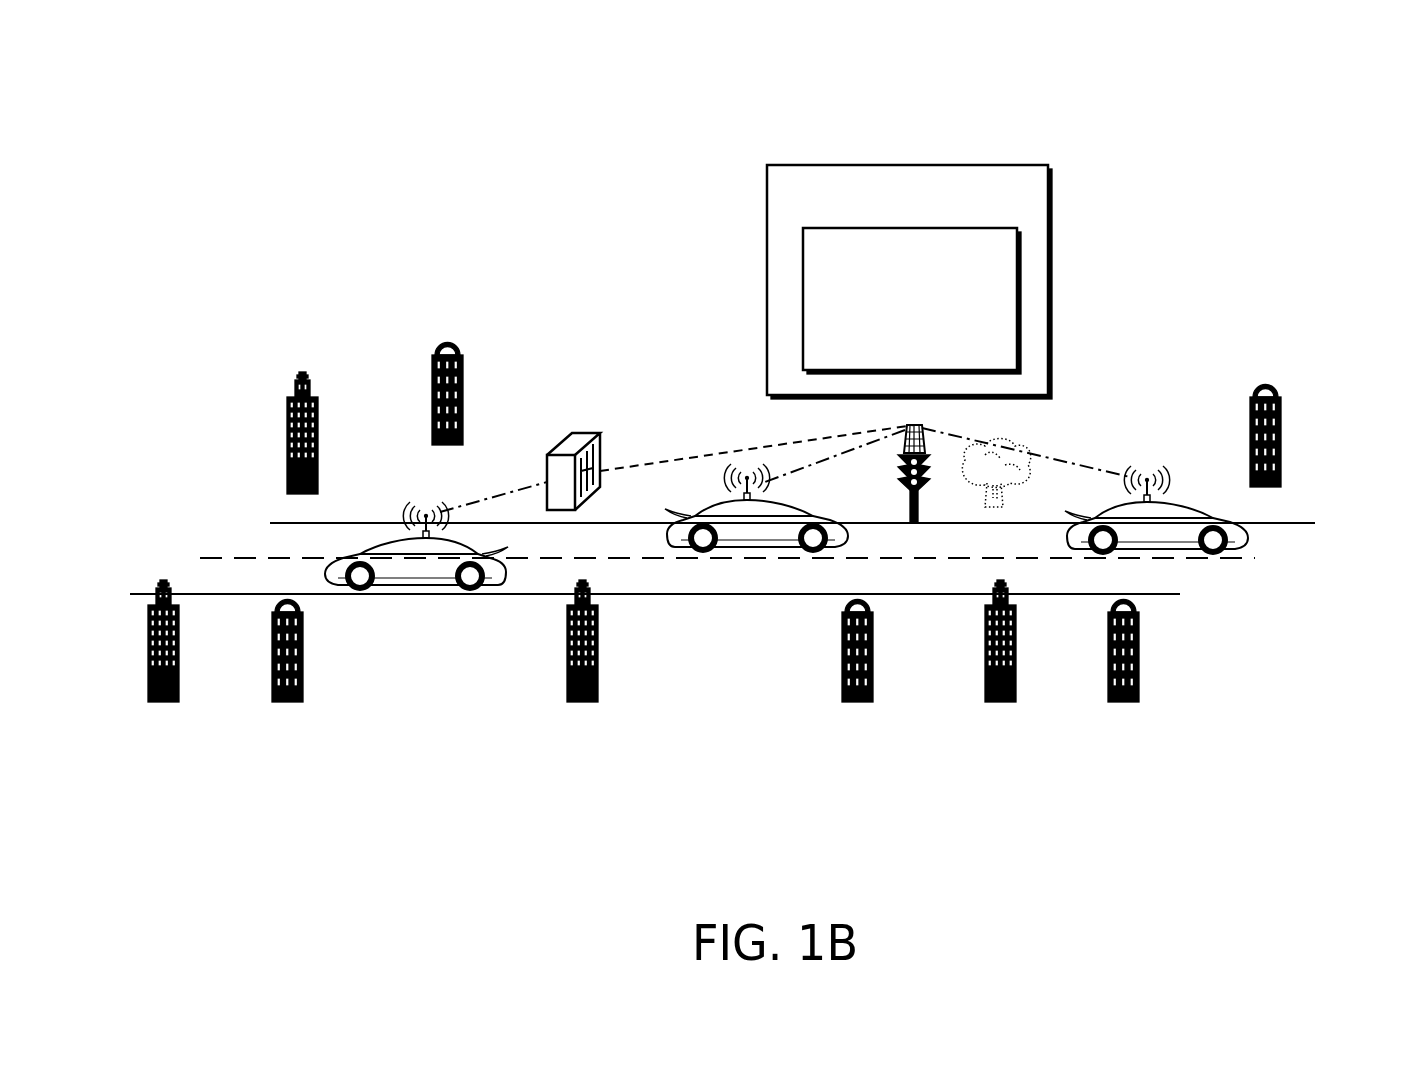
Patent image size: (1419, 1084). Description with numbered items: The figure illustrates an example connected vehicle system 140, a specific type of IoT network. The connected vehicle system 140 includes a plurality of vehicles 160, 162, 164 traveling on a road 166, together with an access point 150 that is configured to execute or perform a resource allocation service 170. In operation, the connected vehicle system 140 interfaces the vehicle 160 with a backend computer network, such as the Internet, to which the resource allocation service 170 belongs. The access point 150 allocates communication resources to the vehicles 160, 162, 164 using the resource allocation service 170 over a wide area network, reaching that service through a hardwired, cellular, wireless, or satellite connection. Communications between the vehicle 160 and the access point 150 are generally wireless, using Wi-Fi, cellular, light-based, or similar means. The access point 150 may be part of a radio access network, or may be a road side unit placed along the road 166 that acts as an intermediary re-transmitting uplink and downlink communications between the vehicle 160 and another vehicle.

The connected vehicle system 140 is at (1323, 90).
The access point 150 is at (1020, 205).
The resource allocation service 170 is at (890, 353).
The vehicle 160 is at (493, 582).
The vehicle 162 is at (788, 547).
The vehicle 164 is at (1220, 518).
The road 166 is at (1258, 584).